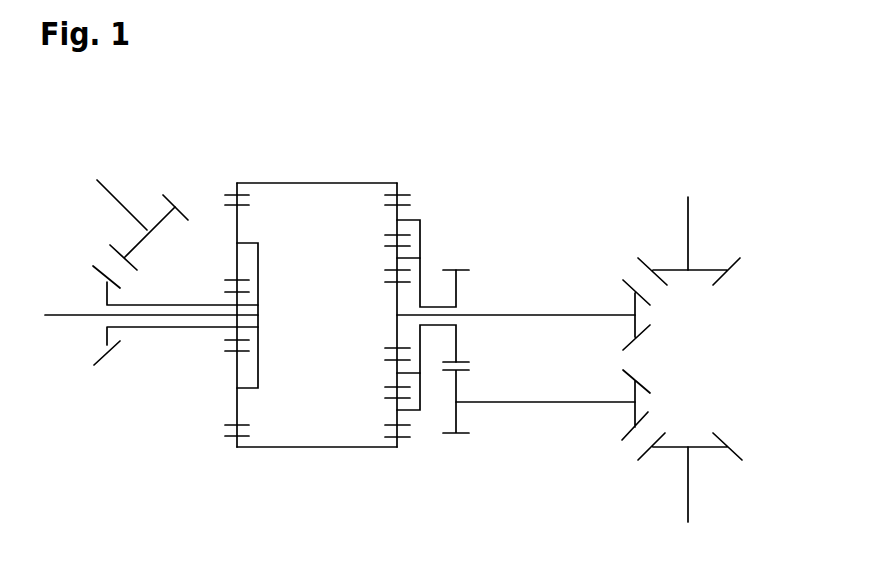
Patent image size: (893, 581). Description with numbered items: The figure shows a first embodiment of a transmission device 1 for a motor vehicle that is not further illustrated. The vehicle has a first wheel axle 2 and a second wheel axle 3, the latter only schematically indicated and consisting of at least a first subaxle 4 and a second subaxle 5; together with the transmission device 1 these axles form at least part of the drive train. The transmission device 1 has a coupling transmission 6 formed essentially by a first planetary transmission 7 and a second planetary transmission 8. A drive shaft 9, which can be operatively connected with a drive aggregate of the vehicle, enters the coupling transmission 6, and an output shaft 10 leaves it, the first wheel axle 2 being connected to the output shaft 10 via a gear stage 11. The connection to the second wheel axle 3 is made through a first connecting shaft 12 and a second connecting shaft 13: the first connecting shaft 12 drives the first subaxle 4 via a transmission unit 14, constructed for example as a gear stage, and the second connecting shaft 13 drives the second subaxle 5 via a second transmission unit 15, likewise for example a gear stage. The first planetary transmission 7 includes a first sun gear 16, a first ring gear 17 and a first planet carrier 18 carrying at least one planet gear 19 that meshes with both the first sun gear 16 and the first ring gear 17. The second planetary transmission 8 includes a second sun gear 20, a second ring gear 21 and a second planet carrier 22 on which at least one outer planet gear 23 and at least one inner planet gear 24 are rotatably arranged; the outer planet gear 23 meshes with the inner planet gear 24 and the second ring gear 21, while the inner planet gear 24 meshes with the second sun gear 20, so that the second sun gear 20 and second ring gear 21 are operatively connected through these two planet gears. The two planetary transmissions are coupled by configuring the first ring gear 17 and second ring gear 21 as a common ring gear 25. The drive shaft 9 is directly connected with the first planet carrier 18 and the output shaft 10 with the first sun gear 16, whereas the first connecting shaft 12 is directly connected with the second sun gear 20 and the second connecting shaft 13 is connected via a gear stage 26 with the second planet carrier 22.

The transmission device 1 is at (355, 126).
The first wheel axle 2 is at (118, 151).
The second wheel axle 3 is at (719, 190).
The first subaxle 4 is at (688, 225).
The second subaxle 5 is at (690, 485).
The coupling transmission 6 is at (436, 150).
The first planetary transmission 7 is at (234, 468).
The second planetary transmission 8 is at (390, 470).
The drive shaft 9 is at (65, 317).
The output shaft 10 is at (148, 330).
The gear stage 11 is at (150, 188).
The first connecting shaft 12 is at (547, 313).
The second connecting shaft 13 is at (547, 407).
The transmission unit 14 is at (669, 300).
The second transmission unit 15 is at (673, 414).
The first sun gear 16 is at (235, 333).
The first ring gear 17 is at (260, 182).
The first planet carrier 18 is at (258, 290).
The planet gear 19 is at (248, 215).
The second sun gear 20 is at (397, 332).
The second ring gear 21 is at (397, 182).
The second planet carrier 22 is at (420, 245).
The outer planet gear 23 is at (397, 220).
The inner planet gear 24 is at (397, 258).
The common ring gear 25 is at (327, 182).
The gear stage 26 is at (482, 365).